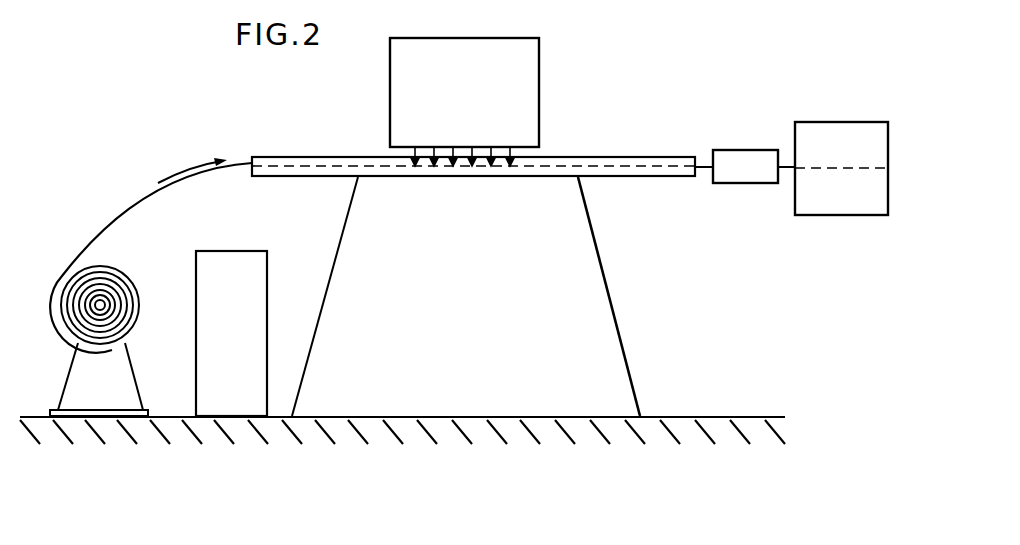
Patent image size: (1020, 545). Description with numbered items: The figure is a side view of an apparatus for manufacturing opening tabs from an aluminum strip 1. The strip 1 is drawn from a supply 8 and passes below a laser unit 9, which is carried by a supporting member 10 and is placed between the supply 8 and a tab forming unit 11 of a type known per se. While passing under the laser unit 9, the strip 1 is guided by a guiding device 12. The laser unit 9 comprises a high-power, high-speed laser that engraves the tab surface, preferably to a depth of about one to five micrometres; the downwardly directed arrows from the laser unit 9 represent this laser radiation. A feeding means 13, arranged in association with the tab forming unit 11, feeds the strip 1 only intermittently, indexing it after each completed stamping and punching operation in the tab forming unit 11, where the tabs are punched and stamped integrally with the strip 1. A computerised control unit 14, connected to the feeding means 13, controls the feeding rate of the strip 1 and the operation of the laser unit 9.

The aluminum strip 1 is at (140, 202).
The supply 8 is at (135, 280).
The laser unit 9 is at (541, 92).
The supporting member 10 is at (600, 348).
The tab forming unit 11 is at (829, 133).
The guiding device 12 is at (303, 162).
The feeding means 13 is at (742, 158).
The computerised control unit 14 is at (235, 262).